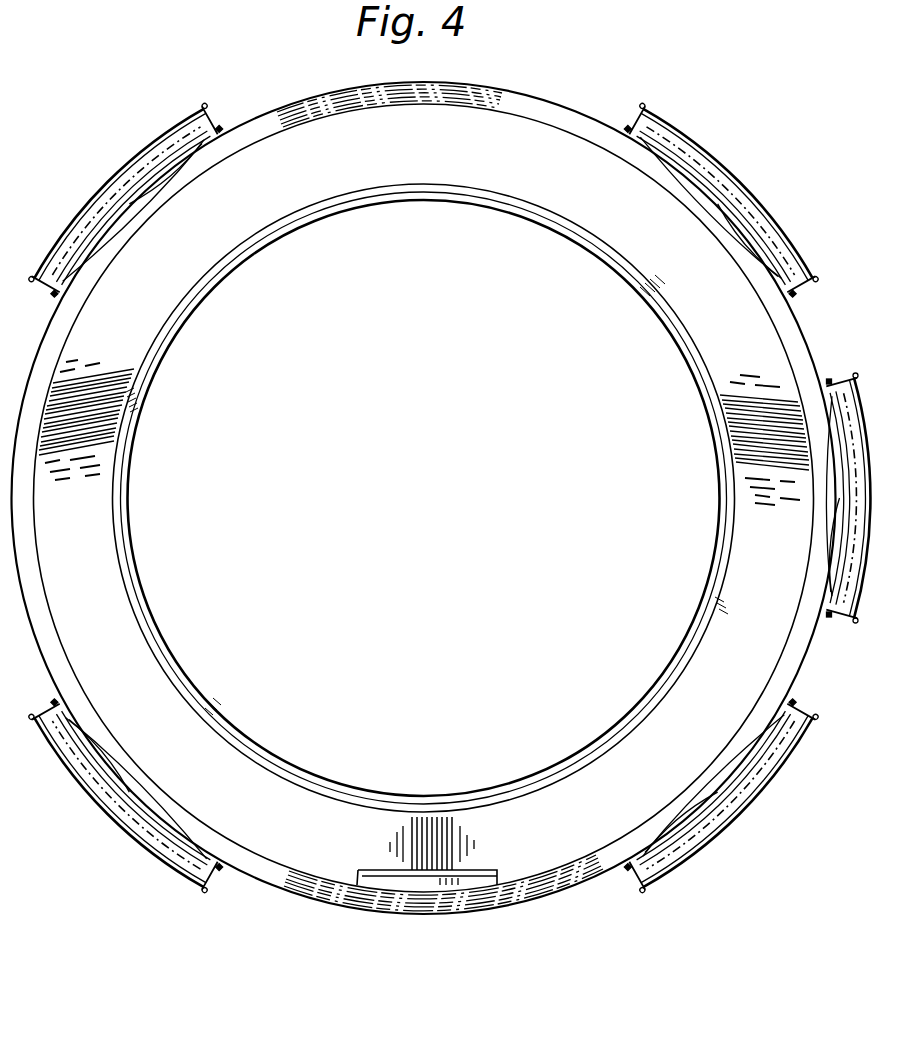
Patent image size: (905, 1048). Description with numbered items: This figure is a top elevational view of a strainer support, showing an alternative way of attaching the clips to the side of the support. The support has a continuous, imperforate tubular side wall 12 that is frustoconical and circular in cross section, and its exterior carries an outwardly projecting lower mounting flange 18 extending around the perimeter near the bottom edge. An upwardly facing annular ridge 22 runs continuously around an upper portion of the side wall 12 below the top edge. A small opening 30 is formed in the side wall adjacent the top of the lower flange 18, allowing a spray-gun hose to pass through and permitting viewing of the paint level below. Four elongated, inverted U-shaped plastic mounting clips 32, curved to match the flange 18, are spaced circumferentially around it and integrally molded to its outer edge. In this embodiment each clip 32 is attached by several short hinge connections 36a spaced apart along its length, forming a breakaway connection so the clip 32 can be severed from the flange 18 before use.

The tubular side wall 12 is at (516, 137).
The lower mounting flange 18 is at (810, 630).
The annular ridge 22 is at (404, 196).
The opening 30 is at (452, 882).
The mounting clip 32 is at (118, 173).
The short hinge connection 36a is at (212, 133).